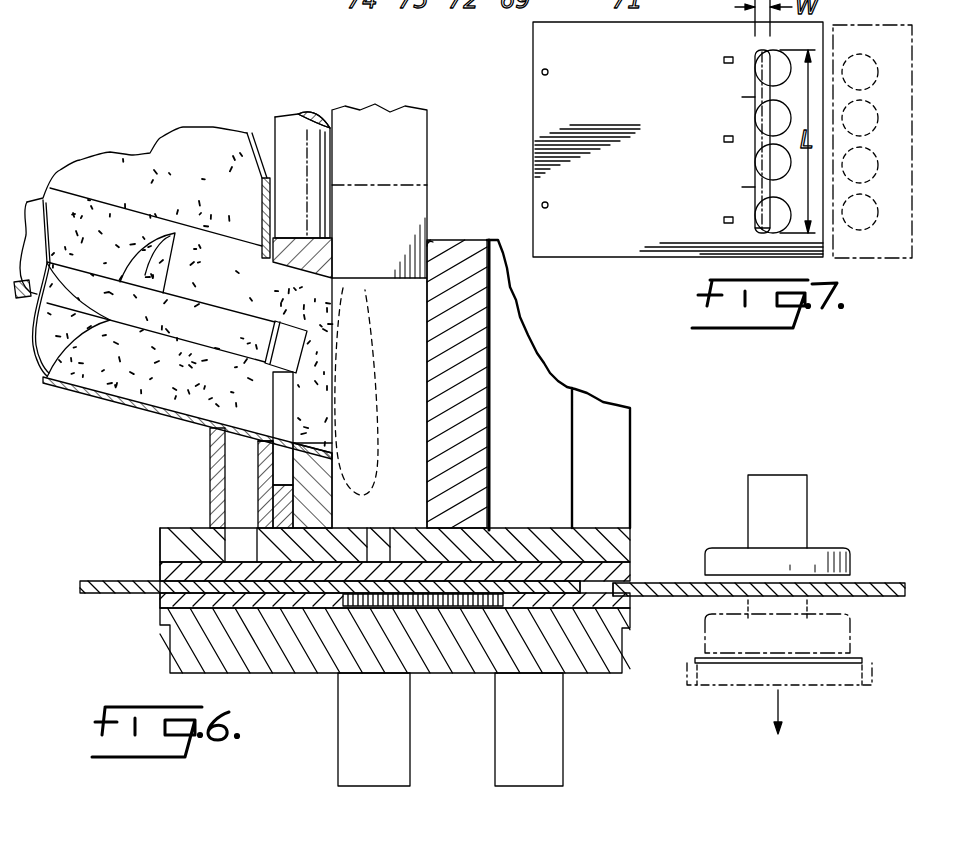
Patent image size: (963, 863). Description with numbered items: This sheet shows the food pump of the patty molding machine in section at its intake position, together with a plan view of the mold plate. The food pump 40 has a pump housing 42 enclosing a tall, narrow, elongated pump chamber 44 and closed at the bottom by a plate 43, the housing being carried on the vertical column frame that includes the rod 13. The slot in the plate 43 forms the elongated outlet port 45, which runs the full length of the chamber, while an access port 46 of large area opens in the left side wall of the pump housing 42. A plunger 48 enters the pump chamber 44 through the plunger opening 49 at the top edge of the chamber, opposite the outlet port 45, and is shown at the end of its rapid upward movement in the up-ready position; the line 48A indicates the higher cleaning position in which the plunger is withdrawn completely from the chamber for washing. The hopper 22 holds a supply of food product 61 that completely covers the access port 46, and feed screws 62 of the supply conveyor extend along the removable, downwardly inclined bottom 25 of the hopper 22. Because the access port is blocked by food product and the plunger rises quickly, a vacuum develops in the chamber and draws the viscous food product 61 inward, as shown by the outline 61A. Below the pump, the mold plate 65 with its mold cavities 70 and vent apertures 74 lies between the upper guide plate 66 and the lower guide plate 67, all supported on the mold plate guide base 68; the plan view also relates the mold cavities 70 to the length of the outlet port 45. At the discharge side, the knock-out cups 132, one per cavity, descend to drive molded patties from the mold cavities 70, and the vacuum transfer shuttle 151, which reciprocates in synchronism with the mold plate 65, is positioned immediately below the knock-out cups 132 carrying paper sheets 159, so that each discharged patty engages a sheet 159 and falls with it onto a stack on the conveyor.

In FIG. 6, the rod 13 is at (288, 124).
In FIG. 6, the hopper 22 is at (157, 150).
In FIG. 6, the bottom of hopper 25 is at (145, 410).
In FIG. 6, the food pump 40 is at (417, 293).
In FIG. 6, the pump housing 42 is at (478, 453).
In FIG. 6, the plate 43 is at (623, 545).
In FIG. 6, the pump chamber 44 is at (437, 405).
In FIG. 7, the pump chamber 44 is at (753, 52).
In FIG. 6, the outlet port 45 is at (378, 528).
In FIG. 7, the outlet port 45 is at (755, 231).
In FIG. 6, the access port 46 is at (305, 277).
In FIG. 6, the plunger 48 is at (423, 140).
In FIG. 6, the line indicating cleaning position 48A is at (405, 179).
In FIG. 6, the plunger opening 49 is at (433, 241).
In FIG. 6, the food product 61 is at (208, 400).
In FIG. 6, the outline of food product 61A is at (375, 347).
In FIG. 6, the feed screw 62 is at (83, 390).
In FIG. 6, the mold plate 65 is at (75, 590).
In FIG. 7, the mold plate 65 is at (617, 230).
In FIG. 6, the upper guide plate 66 is at (160, 570).
In FIG. 6, the lower guide plate 67 is at (160, 603).
In FIG. 6, the mold plate guide base 68 is at (478, 652).
In FIG. 6, the mold cavity 70 is at (705, 595).
In FIG. 7, the mold cavity 70 is at (738, 93).
In FIG. 6, the vent aperture in mold plate 74 is at (600, 583).
In FIG. 7, the vent aperture in mold plate 74 is at (724, 62).
In FIG. 6, the knock-out cup 132 is at (818, 548).
In FIG. 6, the vacuum transfer shuttle 151 is at (690, 682).
In FIG. 6, the sheet of paper 159 is at (857, 660).